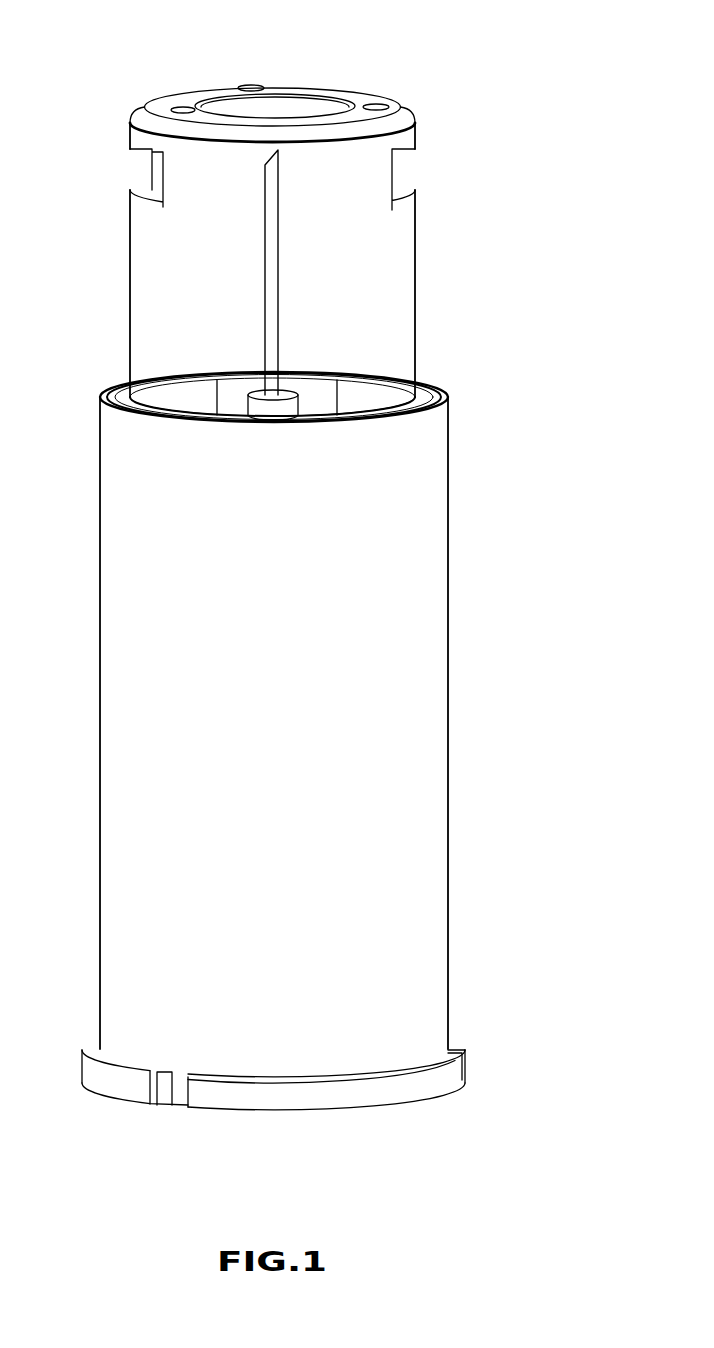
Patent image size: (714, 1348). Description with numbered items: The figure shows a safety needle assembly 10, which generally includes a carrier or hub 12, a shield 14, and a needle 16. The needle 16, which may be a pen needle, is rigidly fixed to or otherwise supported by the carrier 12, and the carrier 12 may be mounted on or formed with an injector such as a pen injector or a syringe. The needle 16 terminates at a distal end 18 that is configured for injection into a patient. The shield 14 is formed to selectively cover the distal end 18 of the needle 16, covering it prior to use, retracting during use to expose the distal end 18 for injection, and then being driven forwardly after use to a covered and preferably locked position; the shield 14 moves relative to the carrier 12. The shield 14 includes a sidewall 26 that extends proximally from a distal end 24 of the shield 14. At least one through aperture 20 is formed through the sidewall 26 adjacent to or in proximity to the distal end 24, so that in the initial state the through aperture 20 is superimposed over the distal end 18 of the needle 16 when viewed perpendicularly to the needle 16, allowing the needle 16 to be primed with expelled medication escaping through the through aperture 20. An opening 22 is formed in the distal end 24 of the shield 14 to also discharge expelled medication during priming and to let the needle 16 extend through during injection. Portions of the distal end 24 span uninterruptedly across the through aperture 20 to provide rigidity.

The safety needle assembly 10 is at (317, 557).
The carrier or hub 12 is at (430, 787).
The shield 14 is at (269, 210).
The needle 16 is at (264, 282).
The distal end 18 is at (265, 155).
The through aperture 20 is at (133, 172).
The opening 22 is at (270, 106).
The distal end 24 is at (365, 101).
The sidewall 26 is at (281, 212).